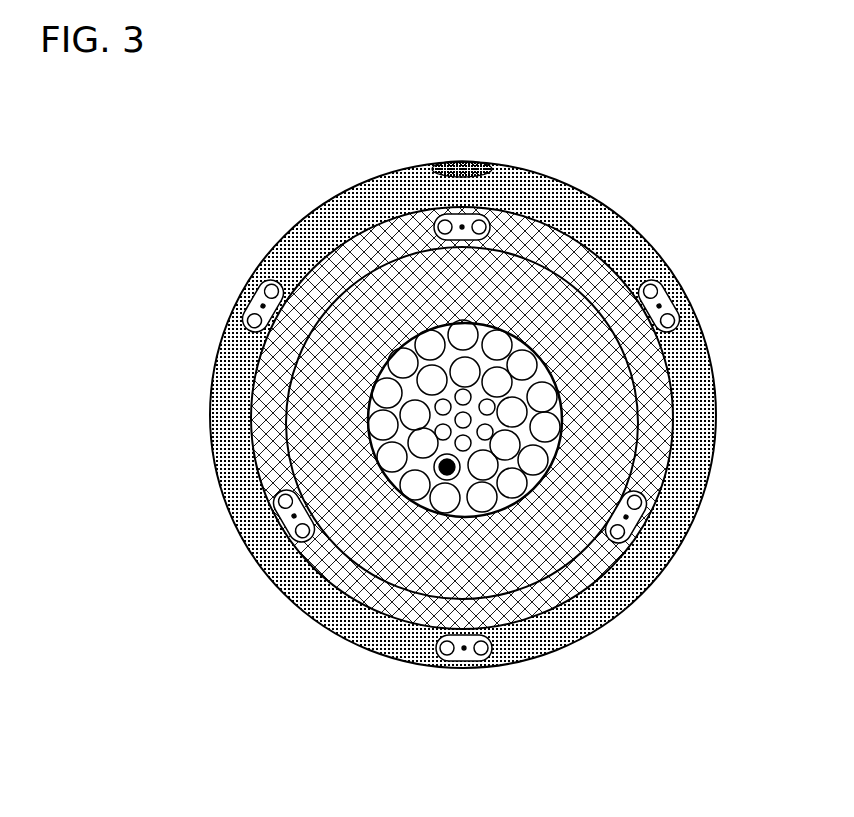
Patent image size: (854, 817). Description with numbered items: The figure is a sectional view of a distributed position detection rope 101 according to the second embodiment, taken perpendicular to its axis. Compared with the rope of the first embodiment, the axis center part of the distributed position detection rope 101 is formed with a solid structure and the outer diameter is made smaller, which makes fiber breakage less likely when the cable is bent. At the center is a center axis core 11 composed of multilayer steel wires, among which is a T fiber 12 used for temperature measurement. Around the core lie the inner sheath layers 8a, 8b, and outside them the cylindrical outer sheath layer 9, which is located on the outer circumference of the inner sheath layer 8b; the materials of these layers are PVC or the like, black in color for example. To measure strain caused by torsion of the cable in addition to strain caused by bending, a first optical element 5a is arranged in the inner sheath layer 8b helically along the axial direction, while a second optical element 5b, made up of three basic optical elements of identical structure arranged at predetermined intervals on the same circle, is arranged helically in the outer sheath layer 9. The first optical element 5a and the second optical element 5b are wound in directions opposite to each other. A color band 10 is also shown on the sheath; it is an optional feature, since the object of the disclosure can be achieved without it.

The distributed position detection rope 101 is at (206, 195).
The color band 10 is at (500, 139).
The first optical element 5a is at (236, 545).
The second optical element 5b is at (694, 282).
The outer sheath layer 9 is at (463, 438).
The inner sheath layer 8b is at (462, 485).
The inner sheath layer 8a is at (462, 512).
The center axis core 11 is at (520, 512).
The T fiber 12 is at (509, 607).